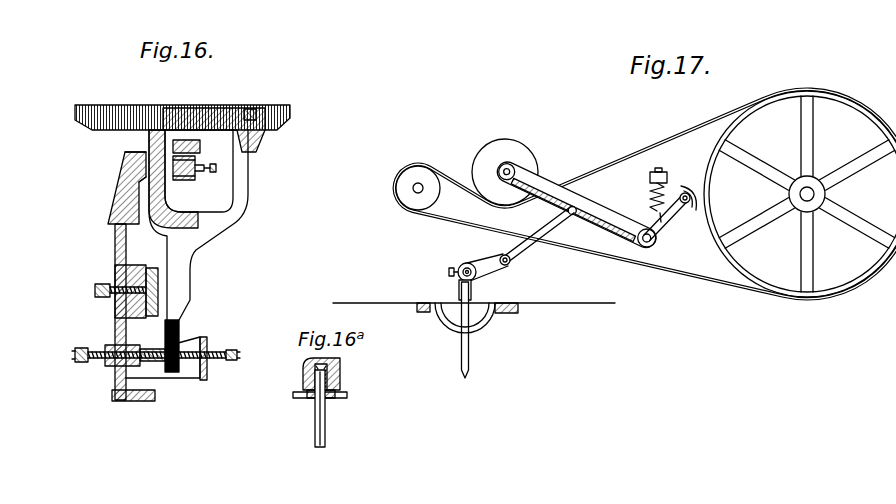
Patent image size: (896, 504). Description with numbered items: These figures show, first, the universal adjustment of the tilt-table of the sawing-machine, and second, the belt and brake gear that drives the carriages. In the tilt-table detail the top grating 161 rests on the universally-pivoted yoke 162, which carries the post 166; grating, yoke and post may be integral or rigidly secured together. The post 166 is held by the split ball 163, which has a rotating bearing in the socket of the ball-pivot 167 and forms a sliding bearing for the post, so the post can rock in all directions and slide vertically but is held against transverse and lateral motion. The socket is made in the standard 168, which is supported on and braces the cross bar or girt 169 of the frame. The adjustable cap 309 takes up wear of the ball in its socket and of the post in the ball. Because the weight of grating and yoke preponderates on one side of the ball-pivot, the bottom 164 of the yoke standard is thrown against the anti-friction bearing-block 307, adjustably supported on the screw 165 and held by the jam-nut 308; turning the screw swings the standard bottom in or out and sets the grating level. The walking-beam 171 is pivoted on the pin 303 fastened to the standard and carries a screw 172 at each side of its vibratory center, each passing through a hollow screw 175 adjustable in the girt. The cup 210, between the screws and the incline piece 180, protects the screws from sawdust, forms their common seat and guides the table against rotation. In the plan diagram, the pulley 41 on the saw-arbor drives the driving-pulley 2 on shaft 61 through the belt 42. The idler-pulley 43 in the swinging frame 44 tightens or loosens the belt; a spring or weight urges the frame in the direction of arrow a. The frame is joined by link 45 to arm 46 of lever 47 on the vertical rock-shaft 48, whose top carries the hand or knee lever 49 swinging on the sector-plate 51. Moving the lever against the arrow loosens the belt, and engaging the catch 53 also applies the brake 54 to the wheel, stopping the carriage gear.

In FIG. 16, the top grating 161 is at (182, 108).
In FIG. 16, the incline piece 180 is at (214, 130).
In FIG. 16, the post 166 is at (149, 140).
In FIG. 16, the adjustable cap 309 is at (194, 174).
In FIG. 16, the universally-pivoted yoke 162 is at (208, 184).
In FIG. 16, the standard 168 is at (116, 188).
In FIG. 16, the split ball 163 is at (128, 156).
In FIG. 16, the ball-pivot socket 167 is at (127, 178).
In FIG. 16, the walking-beam 171 is at (142, 312).
In FIG. 16, the pin 303 is at (117, 292).
In FIG. 16, the bottom of yoke standard 164 is at (180, 330).
In FIG. 16, the screw 165 is at (145, 353).
In FIG. 16, the jam-nut 308 is at (129, 360).
In FIG. 16, the anti-friction bearing-block 307 is at (158, 370).
In FIG. 16, the cross bar or girt 169 is at (133, 403).
In FIG. 16A, the cup 210 is at (333, 374).
In FIG. 16A, the hollow screw 175 is at (304, 399).
In FIG. 16A, the screw 172 is at (332, 408).
In FIG. 17, the belt 42 is at (645, 193).
In FIG. 17, the driving-pulley 2 is at (800, 194).
In FIG. 17, the shaft 61 is at (810, 191).
In FIG. 17, the pulley 41 is at (410, 184).
In FIG. 17, the idler-pulley 43 is at (544, 162).
In FIG. 17, the swinging frame 44 is at (610, 205).
In FIG. 17, the brake 54 is at (670, 213).
In FIG. 17, the link 45 is at (596, 236).
In FIG. 17, the lever 47 is at (493, 272).
In FIG. 17, the arm 46 is at (512, 267).
In FIG. 17, the vertical rock-shaft 48 is at (462, 257).
In FIG. 17, the hand or knee lever 49 is at (477, 329).
In FIG. 17, the sector-plate 51 is at (474, 325).
In FIG. 17, the projection or catch 53 is at (467, 318).
In FIG. 17, the arrow a is at (554, 141).